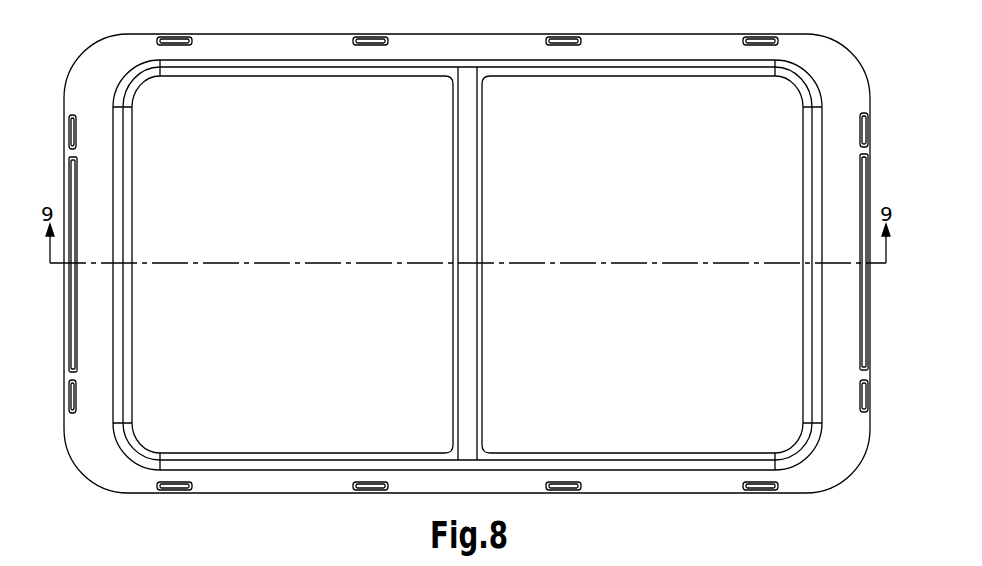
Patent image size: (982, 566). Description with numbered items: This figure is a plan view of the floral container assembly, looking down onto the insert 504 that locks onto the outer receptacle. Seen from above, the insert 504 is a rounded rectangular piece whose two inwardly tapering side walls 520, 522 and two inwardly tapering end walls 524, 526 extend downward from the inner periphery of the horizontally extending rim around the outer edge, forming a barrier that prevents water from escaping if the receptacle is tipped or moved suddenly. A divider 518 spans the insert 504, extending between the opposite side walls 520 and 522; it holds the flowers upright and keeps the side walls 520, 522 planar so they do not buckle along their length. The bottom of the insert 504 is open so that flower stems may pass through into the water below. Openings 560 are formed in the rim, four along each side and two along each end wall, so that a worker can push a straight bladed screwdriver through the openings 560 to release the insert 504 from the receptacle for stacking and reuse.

The insert 504 is at (134, 376).
The divider 518 is at (472, 375).
The side wall 520 is at (290, 70).
The side wall 522 is at (235, 460).
The end wall 524 is at (805, 278).
The end wall 526 is at (127, 315).
The openings 560 is at (174, 37).